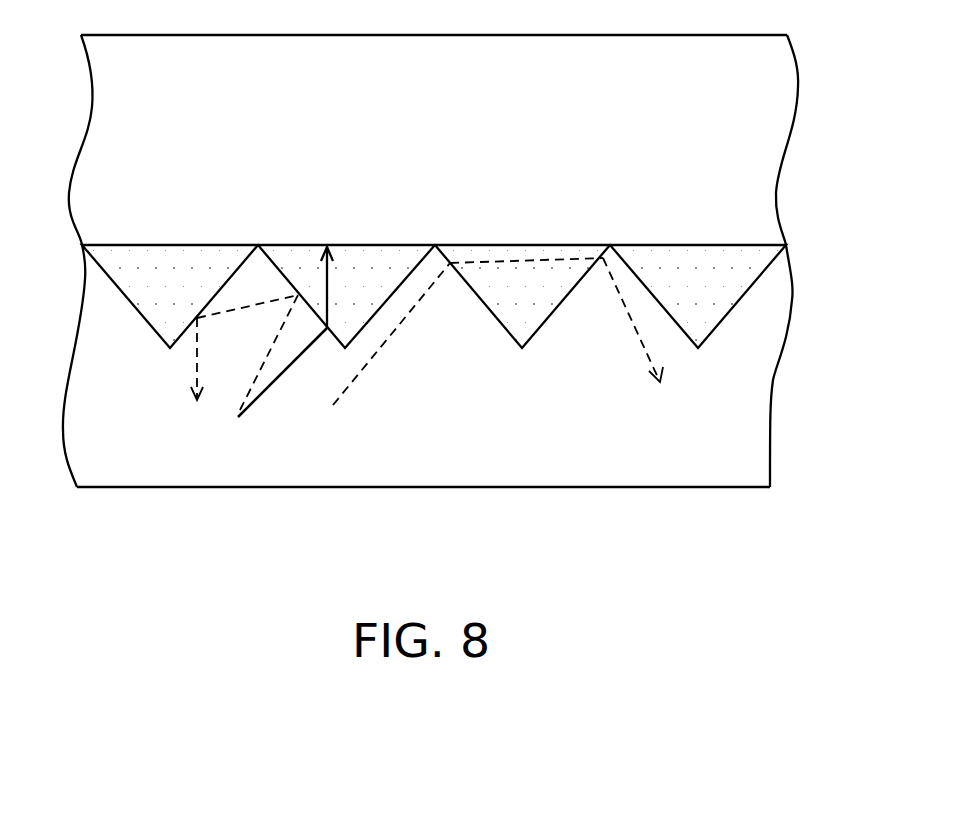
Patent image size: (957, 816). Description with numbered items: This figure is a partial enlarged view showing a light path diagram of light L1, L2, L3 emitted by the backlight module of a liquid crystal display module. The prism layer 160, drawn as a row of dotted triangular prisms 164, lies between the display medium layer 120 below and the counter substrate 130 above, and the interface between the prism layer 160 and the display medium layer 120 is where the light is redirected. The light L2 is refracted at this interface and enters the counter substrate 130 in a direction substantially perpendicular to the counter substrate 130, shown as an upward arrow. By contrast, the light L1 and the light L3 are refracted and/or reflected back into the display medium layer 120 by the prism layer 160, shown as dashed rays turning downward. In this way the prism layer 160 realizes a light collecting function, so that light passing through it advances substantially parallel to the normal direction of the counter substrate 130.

The counter substrate 130 is at (742, 142).
The display medium layer 120 is at (743, 397).
The prism microstructures 164 is at (747, 265).
The prism layer 160 is at (512, 296).
The light L1 is at (197, 365).
The light L2 is at (282, 374).
The light L3 is at (345, 378).